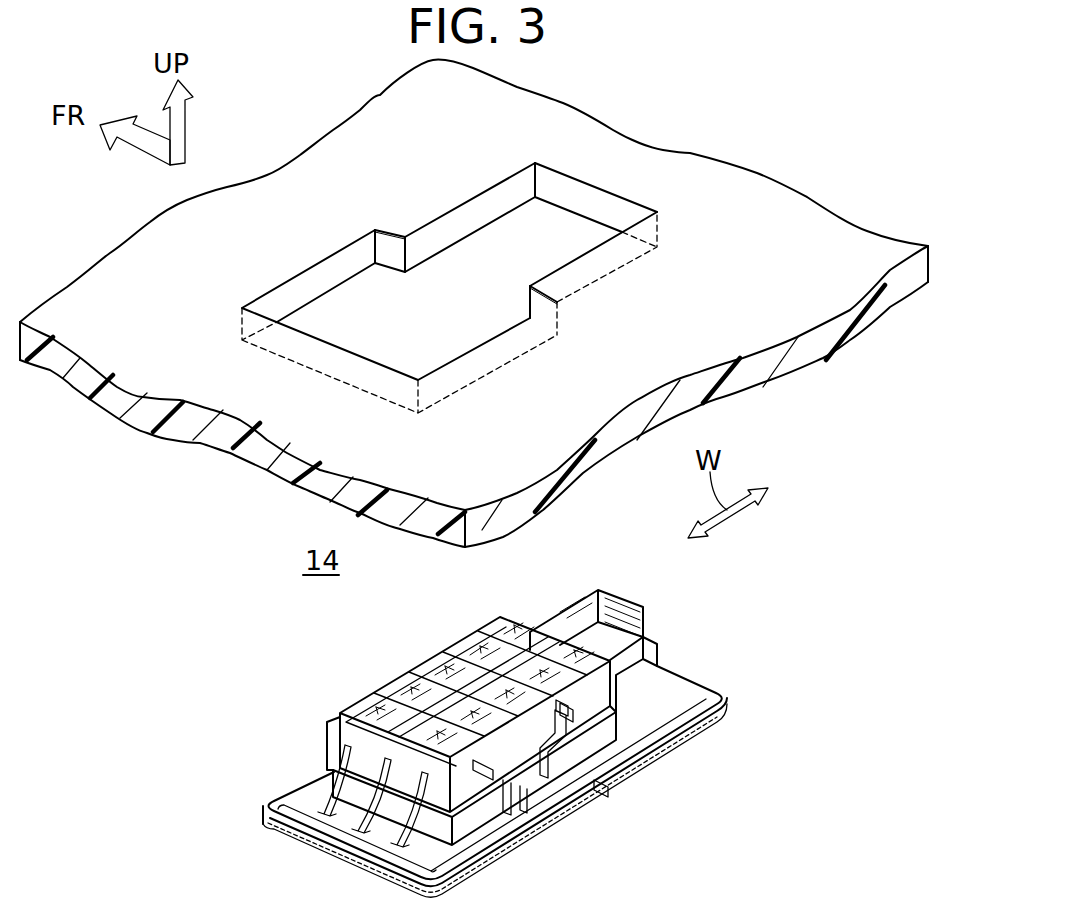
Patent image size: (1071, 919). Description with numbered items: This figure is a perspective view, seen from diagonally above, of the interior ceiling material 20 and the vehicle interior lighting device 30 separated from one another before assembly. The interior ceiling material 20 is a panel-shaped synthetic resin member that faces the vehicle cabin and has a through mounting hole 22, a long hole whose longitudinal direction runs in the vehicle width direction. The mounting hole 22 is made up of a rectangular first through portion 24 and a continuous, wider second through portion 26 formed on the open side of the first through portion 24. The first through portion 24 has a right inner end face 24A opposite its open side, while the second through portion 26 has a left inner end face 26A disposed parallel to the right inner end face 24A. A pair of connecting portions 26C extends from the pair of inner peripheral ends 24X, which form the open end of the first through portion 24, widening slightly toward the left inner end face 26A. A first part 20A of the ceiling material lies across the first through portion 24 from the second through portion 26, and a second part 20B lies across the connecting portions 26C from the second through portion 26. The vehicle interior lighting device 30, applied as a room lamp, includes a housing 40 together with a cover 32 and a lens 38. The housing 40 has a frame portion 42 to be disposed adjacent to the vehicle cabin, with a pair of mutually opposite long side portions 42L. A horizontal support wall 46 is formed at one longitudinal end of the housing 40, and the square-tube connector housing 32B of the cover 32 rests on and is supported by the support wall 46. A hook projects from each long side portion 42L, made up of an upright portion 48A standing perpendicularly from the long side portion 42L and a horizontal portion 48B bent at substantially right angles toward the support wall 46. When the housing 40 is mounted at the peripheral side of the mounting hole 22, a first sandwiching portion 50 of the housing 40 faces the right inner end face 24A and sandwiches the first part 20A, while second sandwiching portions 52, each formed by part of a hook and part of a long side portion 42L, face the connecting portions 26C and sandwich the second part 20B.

The interior ceiling material 20 is at (474, 303).
The first part 20A is at (623, 180).
The second part 20B is at (408, 230).
The mounting hole 22 is at (456, 263).
The first through portion 24 is at (449, 246).
The right inner end face 24A is at (597, 203).
The inner peripheral ends 24X is at (527, 303).
The second through portion 26 is at (456, 279).
The left inner end face 26A is at (452, 342).
The connecting portions 26C is at (383, 251).
The vehicle interior lighting device 30 is at (486, 724).
The cover 32 is at (494, 648).
The connector housing 32B is at (595, 607).
The lens 38 is at (469, 868).
The housing 40 is at (486, 724).
The frame portion 42 is at (486, 792).
The long side portions 42L is at (633, 770).
The support wall 46 is at (660, 660).
The upright portion 48A is at (548, 790).
The horizontal portion 48B is at (575, 763).
The first sandwiching portion 50 is at (679, 696).
The second sandwiching portions 52 is at (594, 798).